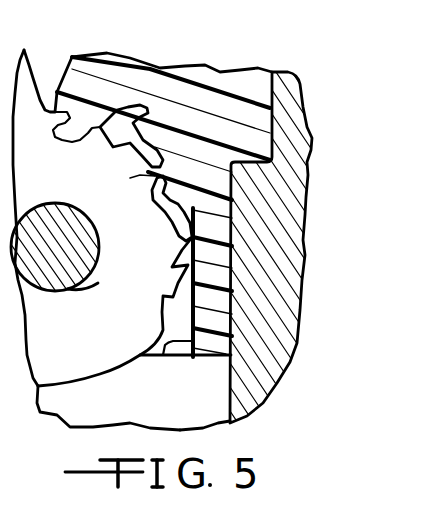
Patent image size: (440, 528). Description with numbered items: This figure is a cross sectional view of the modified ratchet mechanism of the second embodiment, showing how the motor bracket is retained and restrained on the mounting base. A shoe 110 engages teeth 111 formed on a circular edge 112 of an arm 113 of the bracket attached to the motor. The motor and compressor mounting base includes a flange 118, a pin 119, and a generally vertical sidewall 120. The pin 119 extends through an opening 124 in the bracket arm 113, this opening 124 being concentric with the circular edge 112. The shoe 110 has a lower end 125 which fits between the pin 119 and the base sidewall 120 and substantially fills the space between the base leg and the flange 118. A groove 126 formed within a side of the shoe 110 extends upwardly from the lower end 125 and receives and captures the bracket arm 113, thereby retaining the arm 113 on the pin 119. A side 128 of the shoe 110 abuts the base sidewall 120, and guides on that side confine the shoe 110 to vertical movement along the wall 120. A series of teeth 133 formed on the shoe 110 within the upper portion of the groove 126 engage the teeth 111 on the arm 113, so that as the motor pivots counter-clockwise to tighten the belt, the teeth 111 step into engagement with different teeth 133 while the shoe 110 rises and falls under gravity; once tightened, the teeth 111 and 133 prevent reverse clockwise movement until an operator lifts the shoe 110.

The shoe 110 is at (226, 70).
The teeth 111 is at (173, 101).
The circular edge 112 is at (93, 383).
The arm 113 is at (33, 73).
The flange 118 is at (73, 400).
The pin 119 is at (68, 288).
The sidewall 120 is at (223, 420).
The opening 124 is at (51, 190).
The lower end 125 is at (203, 357).
The groove 126 is at (163, 356).
The side 128 is at (234, 277).
The teeth 133 is at (72, 142).